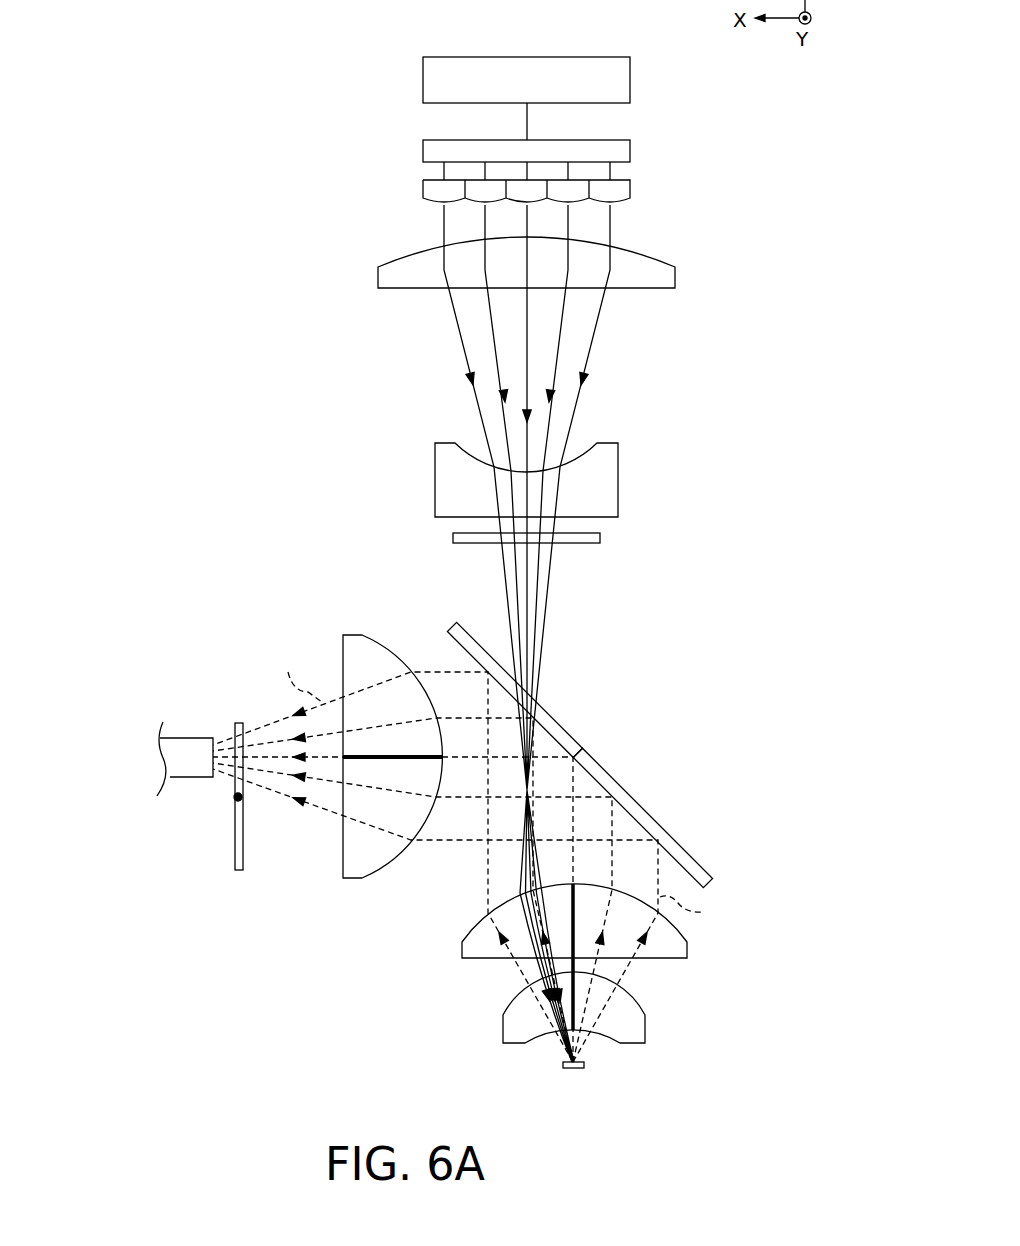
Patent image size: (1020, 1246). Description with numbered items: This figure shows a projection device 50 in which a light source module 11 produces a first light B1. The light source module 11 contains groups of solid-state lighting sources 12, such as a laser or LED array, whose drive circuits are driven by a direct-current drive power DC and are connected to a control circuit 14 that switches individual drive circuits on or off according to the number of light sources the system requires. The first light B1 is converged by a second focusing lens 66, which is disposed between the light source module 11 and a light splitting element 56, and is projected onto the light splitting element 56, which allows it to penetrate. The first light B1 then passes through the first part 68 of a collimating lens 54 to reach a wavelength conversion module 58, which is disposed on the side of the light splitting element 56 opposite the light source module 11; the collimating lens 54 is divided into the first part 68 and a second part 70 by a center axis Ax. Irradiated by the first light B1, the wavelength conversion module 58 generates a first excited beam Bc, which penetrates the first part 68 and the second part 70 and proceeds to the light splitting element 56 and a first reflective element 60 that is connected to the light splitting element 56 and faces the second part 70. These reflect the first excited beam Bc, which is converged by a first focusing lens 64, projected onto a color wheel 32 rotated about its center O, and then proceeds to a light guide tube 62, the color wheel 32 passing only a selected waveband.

The projection device 50 is at (148, 158).
The direct-current drive power DC is at (423, 78).
The light source module 11 is at (668, 140).
The control circuit 14 is at (423, 150).
The solid-state lighting sources 12 is at (630, 190).
The second focusing lens 66 is at (650, 288).
The first light B1 is at (590, 343).
The light splitting element 56 is at (452, 626).
The first reflective element 60 is at (693, 853).
The first excited beam Bc is at (472, 854).
The light guide tube 62 is at (188, 762).
The center of the color wheel O is at (234, 800).
The color wheel 32 is at (240, 870).
The first focusing lens 64 is at (350, 878).
The center axis Ax is at (575, 922).
The first part 68 is at (462, 948).
The second part 70 is at (575, 963).
The collimating lens 54 is at (575, 976).
The wavelength conversion module 58 is at (574, 1068).